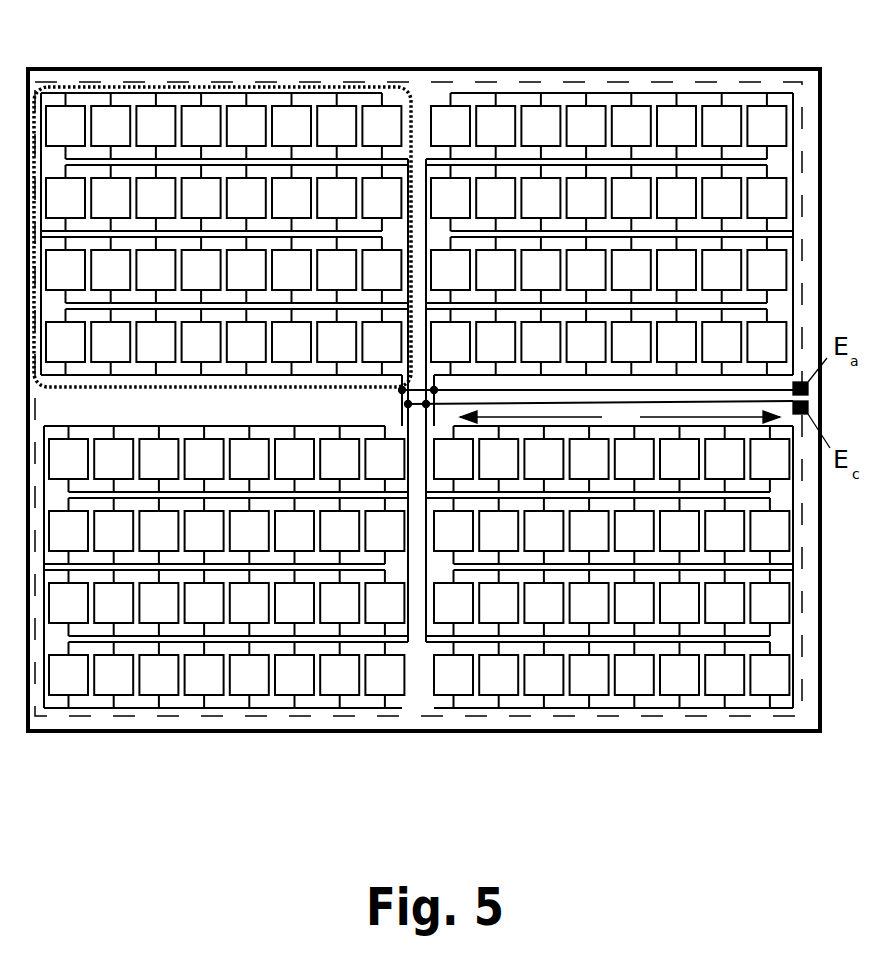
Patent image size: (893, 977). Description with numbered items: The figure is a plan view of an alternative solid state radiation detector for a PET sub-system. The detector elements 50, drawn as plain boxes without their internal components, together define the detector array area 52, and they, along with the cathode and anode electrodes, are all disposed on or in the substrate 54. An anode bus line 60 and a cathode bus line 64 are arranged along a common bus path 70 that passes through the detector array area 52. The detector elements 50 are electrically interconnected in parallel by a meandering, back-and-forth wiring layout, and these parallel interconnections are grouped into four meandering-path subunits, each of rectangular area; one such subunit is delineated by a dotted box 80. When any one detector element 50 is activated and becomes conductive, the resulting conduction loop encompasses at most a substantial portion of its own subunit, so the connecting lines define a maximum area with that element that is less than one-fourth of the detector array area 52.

The detector elements 50 is at (203, 679).
The detector array area 52 is at (397, 82).
The substrate 54 is at (740, 733).
The anode bus line 60 is at (768, 388).
The cathode bus line 64 is at (778, 403).
The common bus path 70 is at (620, 417).
The dotted box 80 is at (240, 87).